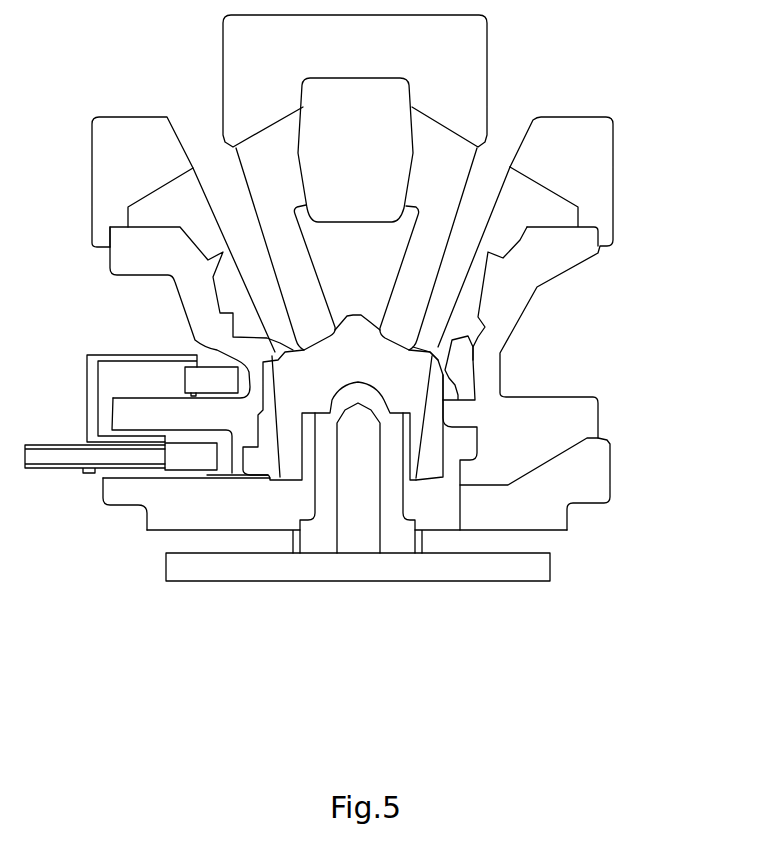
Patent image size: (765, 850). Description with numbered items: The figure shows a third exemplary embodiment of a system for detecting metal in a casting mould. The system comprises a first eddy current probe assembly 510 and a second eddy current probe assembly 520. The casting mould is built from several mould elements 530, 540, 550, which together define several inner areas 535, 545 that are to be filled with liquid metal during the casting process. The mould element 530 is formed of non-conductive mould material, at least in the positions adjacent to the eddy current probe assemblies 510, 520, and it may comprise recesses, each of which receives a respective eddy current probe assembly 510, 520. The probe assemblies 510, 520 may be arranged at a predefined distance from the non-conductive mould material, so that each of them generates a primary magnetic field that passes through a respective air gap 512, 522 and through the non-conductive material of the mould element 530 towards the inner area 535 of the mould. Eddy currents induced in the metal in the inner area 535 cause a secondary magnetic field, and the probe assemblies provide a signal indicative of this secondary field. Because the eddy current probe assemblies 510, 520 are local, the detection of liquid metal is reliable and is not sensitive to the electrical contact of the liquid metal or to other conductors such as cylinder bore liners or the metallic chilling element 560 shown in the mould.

The first eddy current probe assembly 510 is at (183, 458).
The air gap 512 is at (225, 462).
The second eddy current probe assembly 520 is at (197, 341).
The air gap 522 is at (217, 372).
The mould element 530 is at (133, 245).
The inner area 535 is at (258, 458).
The mould element 540 is at (543, 265).
The inner area 545 is at (447, 483).
The mould element 550 is at (423, 460).
The metallic chilling element 560 is at (362, 538).